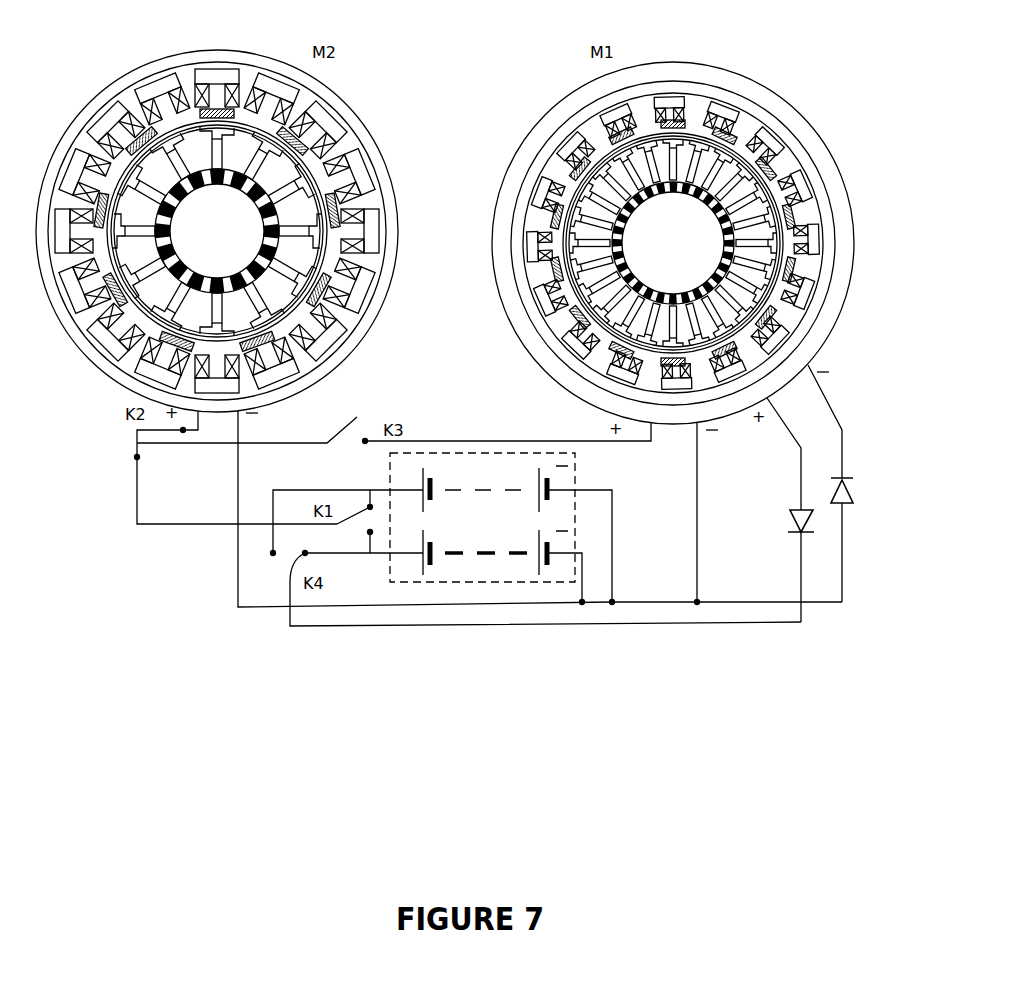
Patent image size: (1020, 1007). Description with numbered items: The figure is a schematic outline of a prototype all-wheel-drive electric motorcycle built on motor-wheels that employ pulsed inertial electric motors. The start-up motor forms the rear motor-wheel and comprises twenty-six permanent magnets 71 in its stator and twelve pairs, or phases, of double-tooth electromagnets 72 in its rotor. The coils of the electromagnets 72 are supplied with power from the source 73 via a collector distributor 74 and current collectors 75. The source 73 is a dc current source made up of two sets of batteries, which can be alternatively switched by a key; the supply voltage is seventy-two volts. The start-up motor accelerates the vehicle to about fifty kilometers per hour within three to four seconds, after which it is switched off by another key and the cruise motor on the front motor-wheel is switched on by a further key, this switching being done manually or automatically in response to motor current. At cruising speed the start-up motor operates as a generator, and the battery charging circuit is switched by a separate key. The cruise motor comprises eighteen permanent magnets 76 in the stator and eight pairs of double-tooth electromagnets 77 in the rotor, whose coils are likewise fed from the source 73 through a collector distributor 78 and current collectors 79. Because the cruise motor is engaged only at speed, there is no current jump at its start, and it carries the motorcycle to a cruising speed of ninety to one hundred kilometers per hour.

The permanent magnets 71 is at (562, 303).
The double-tooth electromagnets 72 is at (553, 165).
The power source 73 is at (473, 582).
The collector distributor 74 is at (542, 202).
The current collectors 75 is at (537, 253).
The permanent magnets 76 is at (332, 258).
The double-tooth electromagnets 77 is at (330, 128).
The collector distributor 78 is at (283, 235).
The current collectors 79 is at (250, 303).